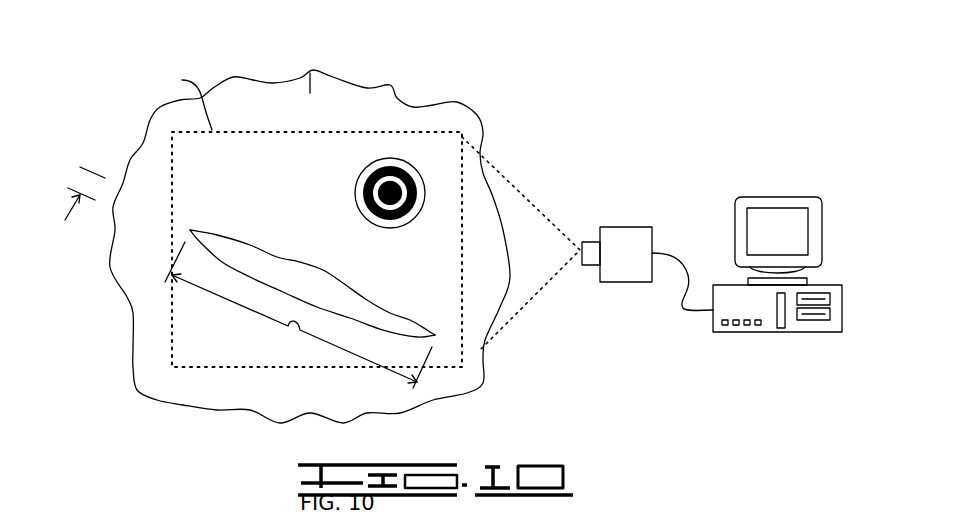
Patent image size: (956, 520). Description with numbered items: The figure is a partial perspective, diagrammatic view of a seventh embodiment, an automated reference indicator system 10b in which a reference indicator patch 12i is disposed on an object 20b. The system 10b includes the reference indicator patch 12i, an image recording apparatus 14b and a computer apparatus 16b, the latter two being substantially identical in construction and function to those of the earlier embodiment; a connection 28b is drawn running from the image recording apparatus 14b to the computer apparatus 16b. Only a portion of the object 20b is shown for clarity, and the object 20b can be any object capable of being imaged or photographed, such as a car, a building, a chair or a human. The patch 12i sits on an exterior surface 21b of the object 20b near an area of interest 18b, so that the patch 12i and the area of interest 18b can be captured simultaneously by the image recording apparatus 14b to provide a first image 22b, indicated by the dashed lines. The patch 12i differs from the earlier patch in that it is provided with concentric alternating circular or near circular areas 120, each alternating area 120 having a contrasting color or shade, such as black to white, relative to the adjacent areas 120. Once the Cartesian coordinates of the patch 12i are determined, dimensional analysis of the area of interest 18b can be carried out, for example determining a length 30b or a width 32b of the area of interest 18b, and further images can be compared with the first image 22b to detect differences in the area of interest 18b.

The automated reference indicator system 10b is at (403, 58).
The object 20b is at (407, 108).
The exterior surface 21b is at (311, 72).
The first image 22b is at (177, 99).
The width 32b is at (97, 168).
The reference indicator patch 12i is at (352, 190).
The alternating areas 120 is at (365, 200).
The area of interest 18b is at (360, 303).
The length 30b is at (283, 323).
The image recording apparatus 14b is at (633, 223).
The cable 28b is at (685, 304).
The computer apparatus 16b is at (777, 184).